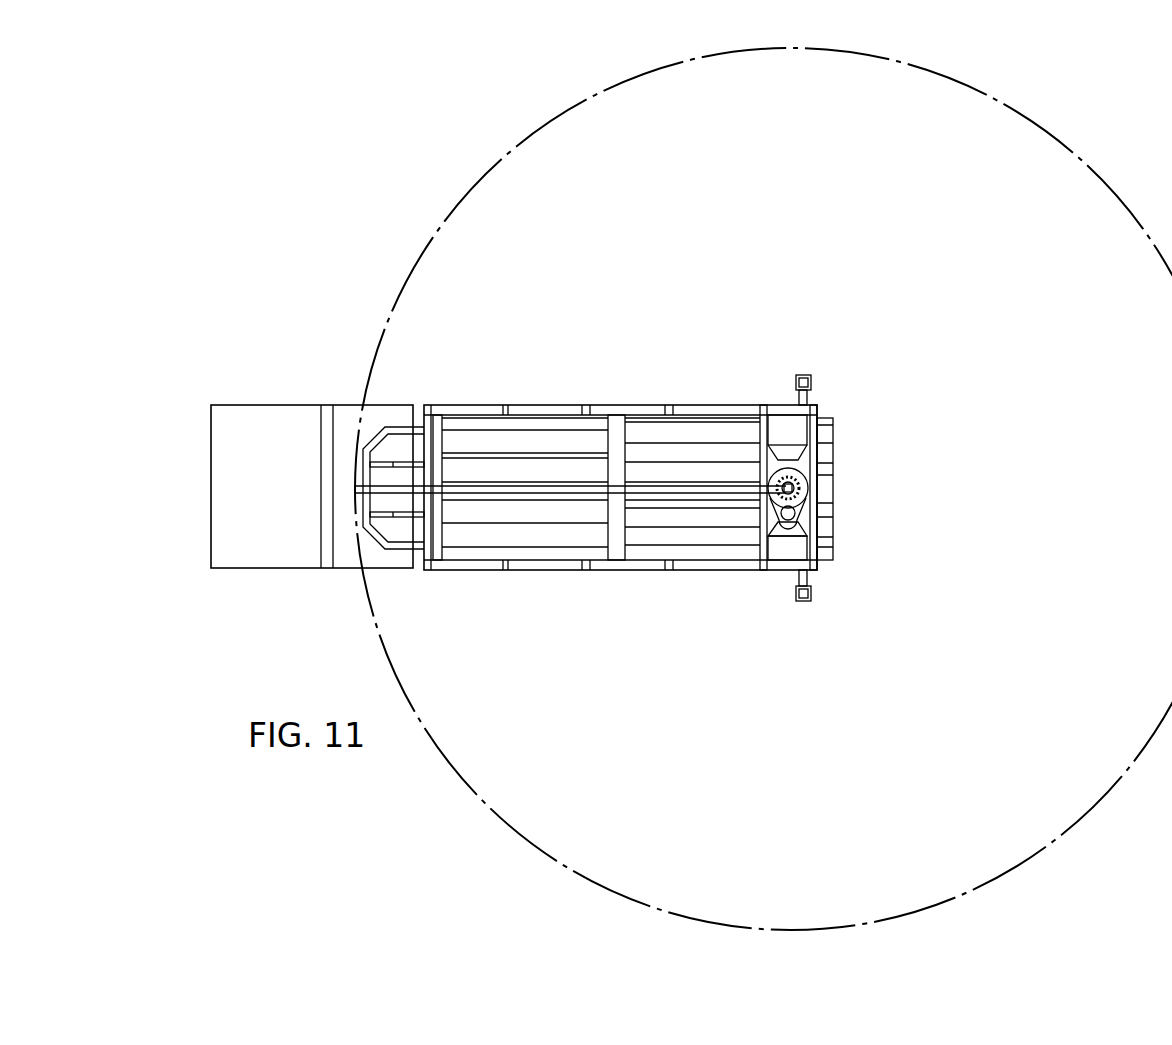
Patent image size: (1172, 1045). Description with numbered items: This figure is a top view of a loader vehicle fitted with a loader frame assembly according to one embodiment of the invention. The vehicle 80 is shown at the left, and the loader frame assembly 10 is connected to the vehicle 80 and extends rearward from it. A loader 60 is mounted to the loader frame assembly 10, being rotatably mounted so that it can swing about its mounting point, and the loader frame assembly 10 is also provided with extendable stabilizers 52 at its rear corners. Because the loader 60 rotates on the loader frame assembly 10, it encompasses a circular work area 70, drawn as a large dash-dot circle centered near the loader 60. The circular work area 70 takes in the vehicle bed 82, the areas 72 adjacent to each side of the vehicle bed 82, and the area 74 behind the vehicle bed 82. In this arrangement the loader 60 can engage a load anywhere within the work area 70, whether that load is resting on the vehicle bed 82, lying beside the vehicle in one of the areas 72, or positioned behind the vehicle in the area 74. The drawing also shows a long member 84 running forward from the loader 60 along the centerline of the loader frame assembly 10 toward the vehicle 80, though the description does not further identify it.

The loader frame assembly 10 is at (828, 455).
The extendable stabilizers 52 is at (830, 396).
The loader 60 is at (742, 470).
The circular work area 70 is at (1048, 135).
The areas adjacent to each side of vehicle bed 72 is at (652, 370).
The area behind vehicle bed 74 is at (1007, 499).
The vehicle 80 is at (266, 396).
The vehicle bed 82 is at (568, 572).
The drawbar 84 is at (848, 515).